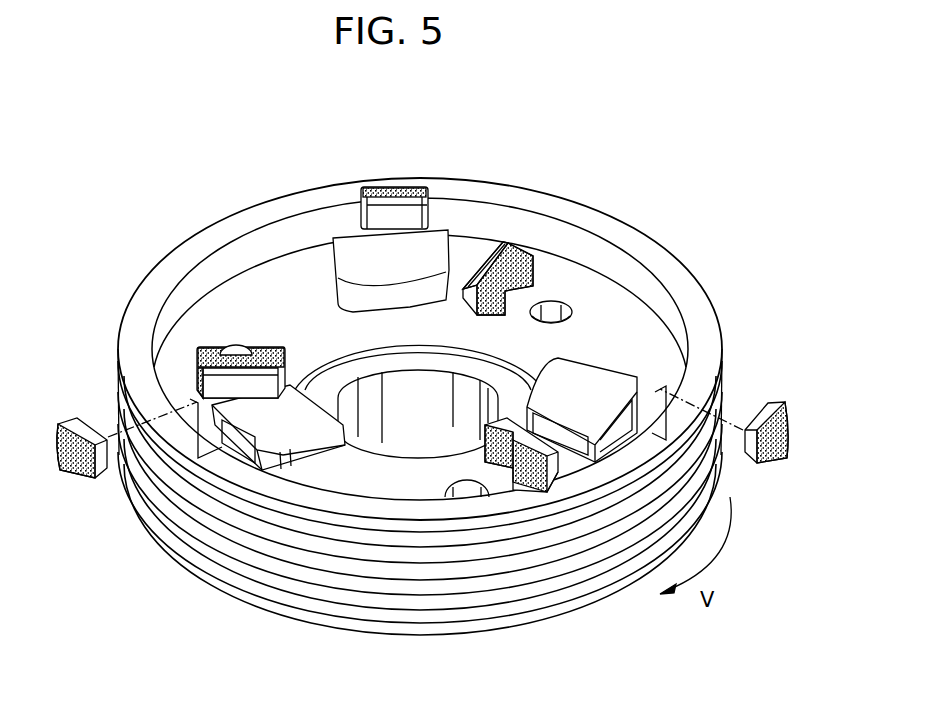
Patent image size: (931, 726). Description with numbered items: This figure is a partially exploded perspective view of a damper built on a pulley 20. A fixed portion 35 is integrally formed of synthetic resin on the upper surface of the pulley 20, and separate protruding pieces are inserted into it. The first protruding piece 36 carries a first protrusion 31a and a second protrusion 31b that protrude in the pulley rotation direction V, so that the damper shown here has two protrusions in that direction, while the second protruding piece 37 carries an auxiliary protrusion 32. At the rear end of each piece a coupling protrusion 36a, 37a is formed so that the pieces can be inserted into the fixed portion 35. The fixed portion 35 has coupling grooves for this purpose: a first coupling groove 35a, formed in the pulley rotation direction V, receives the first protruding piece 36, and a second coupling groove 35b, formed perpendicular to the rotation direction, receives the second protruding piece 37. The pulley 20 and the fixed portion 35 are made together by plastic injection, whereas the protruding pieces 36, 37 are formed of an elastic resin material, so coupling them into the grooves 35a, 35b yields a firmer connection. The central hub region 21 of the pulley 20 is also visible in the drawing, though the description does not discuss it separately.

The pulley 20 is at (198, 576).
The hub bore 21 is at (360, 403).
The first protrusion 31a is at (540, 250).
The second protrusion 31b is at (533, 270).
The auxiliary protrusion 32 is at (396, 188).
The fixed portion 35 is at (345, 243).
The first coupling groove 35a is at (577, 445).
The second coupling groove 35b is at (655, 392).
The first protruding piece 36 is at (531, 234).
The coupling protrusion 36a is at (496, 252).
The second protruding piece 37 is at (356, 190).
The coupling protrusion 37a is at (415, 212).